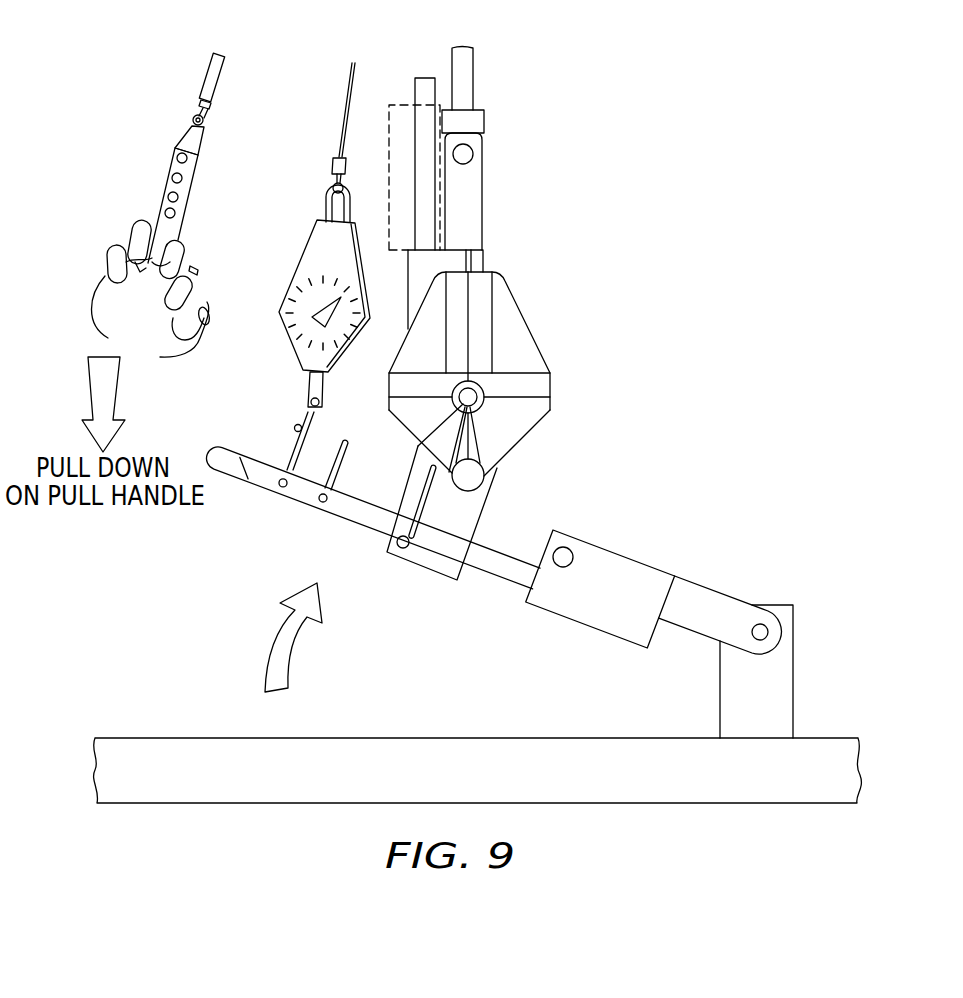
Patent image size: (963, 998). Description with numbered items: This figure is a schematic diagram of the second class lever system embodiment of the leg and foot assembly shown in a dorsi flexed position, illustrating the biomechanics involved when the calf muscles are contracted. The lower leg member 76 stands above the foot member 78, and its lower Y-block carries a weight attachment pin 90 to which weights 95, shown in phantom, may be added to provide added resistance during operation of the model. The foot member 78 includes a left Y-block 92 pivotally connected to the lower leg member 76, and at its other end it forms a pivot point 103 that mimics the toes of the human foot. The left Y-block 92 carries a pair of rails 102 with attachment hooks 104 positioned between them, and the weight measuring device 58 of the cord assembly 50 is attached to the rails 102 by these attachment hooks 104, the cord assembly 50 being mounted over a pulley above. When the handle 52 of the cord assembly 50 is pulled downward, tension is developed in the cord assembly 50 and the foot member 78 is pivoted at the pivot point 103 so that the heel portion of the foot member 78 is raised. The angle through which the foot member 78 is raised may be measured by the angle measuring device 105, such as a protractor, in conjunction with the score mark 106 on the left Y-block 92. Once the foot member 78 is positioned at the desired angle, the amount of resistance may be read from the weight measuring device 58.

The cord assembly 50 is at (180, 108).
The handle 52 is at (175, 162).
The weight measuring device 58 is at (318, 247).
The lower leg member 76 is at (560, 197).
The foot member 78 is at (640, 518).
The weight attachment pin 90 is at (427, 83).
The left Y-block 92 is at (435, 563).
The weights (shown in phantom) 95 is at (412, 103).
The rails 102 is at (353, 515).
The pivot point 103 is at (758, 617).
The attachment hooks 104 is at (297, 443).
The angle measuring device 105 is at (520, 338).
The score mark 106 is at (420, 498).